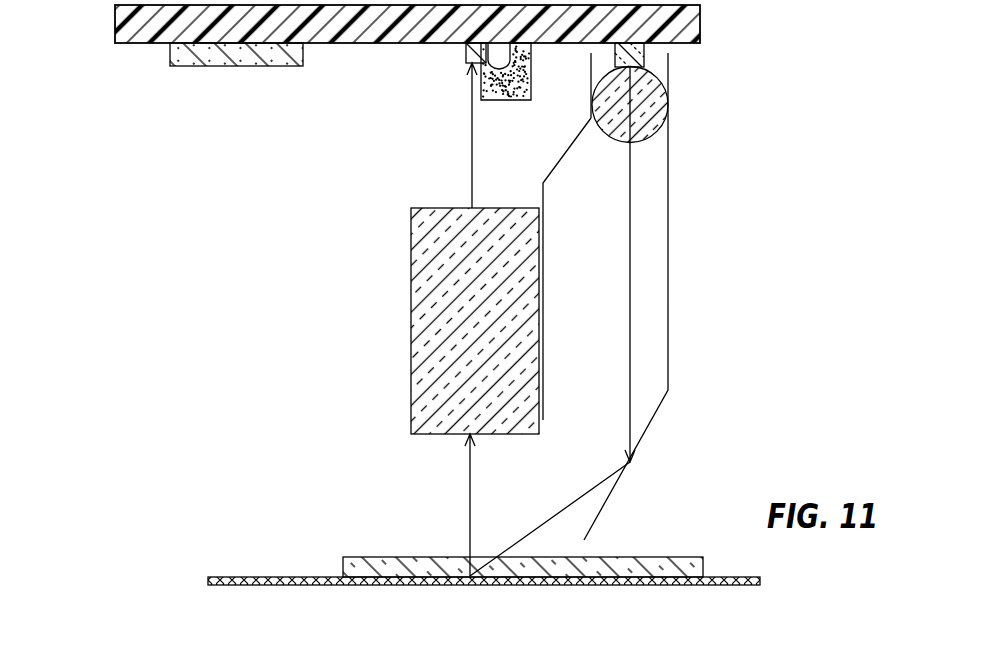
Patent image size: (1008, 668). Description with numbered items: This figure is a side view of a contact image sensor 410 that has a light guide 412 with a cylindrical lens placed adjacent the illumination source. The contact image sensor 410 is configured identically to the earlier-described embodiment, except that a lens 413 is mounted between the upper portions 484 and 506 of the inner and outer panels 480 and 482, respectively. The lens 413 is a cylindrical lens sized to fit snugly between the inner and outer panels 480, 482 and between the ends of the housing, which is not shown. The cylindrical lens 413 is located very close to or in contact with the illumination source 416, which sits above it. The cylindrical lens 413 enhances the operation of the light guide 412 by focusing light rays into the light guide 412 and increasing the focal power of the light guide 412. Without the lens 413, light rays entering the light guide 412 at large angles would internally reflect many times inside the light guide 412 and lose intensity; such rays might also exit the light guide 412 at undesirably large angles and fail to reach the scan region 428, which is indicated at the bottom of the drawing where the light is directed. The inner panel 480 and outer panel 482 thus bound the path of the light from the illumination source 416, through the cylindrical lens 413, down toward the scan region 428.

The contact image sensor 410 is at (133, 104).
The illumination source 416 is at (700, 68).
The lens 413 is at (666, 137).
The light guide 412 is at (732, 144).
The upper portion of inner panel 484 is at (591, 82).
The inner panel 480 is at (558, 163).
The upper portion of outer panel 506 is at (668, 200).
The outer panel 482 is at (668, 310).
The scan region 428 is at (524, 610).